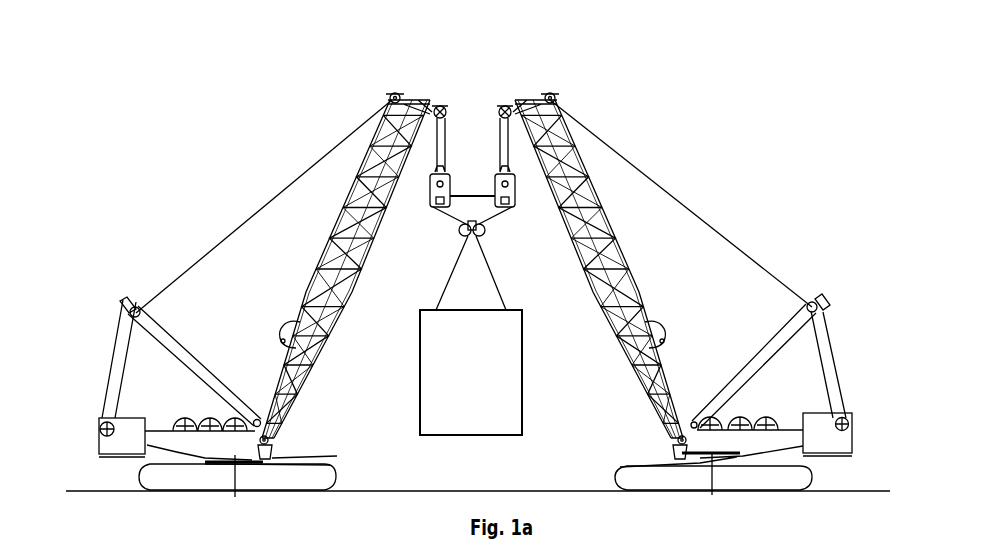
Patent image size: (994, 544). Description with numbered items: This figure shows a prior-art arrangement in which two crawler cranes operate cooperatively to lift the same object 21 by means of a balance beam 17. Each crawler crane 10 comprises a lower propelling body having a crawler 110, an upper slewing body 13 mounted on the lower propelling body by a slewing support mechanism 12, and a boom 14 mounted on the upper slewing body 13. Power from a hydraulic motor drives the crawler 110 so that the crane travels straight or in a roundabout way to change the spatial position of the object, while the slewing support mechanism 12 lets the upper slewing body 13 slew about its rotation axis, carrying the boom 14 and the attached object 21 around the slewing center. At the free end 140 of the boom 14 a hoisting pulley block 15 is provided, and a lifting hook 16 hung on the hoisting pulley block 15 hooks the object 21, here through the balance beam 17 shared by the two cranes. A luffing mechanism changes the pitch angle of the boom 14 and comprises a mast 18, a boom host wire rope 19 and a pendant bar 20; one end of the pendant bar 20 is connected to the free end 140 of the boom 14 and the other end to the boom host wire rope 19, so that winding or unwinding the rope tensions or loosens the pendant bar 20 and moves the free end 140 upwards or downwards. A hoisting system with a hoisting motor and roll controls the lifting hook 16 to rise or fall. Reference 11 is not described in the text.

The crawler crane 10 is at (256, 153).
The pontoon 11 is at (192, 480).
The slewing support mechanism 12 is at (300, 457).
The upper slewing body 13 is at (247, 446).
The boom 14 is at (342, 311).
The free end of the boom 140 is at (417, 97).
The hoisting pulley block 15 is at (443, 108).
The lifting hook 16 is at (462, 233).
The balance beam 17 is at (491, 211).
The mast 18 is at (152, 320).
The boom host wire rope 19 is at (117, 375).
The pendant bar 20 is at (232, 233).
The object 21 is at (467, 432).
The crawler 110 is at (342, 484).